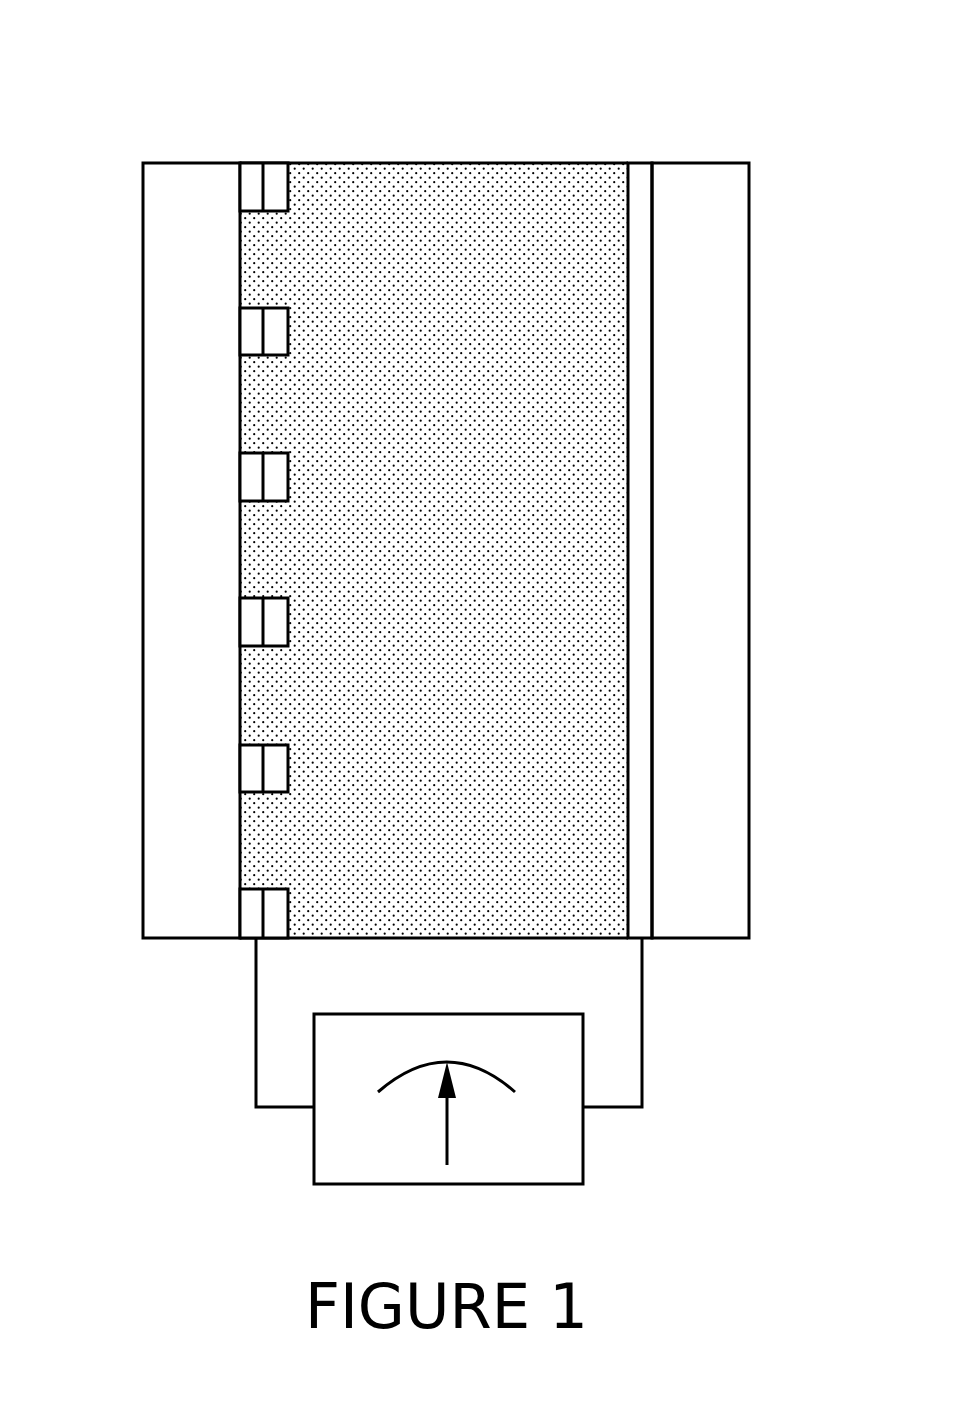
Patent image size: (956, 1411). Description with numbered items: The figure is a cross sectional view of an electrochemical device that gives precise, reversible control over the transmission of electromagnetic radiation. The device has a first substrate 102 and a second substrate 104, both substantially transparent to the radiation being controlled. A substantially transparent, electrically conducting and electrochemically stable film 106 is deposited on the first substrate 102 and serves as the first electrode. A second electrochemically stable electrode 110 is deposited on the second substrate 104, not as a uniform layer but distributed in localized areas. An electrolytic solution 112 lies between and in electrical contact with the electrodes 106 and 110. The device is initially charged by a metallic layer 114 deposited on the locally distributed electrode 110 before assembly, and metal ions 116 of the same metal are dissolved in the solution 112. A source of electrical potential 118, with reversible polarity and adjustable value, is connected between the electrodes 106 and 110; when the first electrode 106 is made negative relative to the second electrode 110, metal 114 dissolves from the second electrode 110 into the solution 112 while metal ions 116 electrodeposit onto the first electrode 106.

The first substrate 102 is at (712, 307).
The second substrate 104 is at (157, 557).
The electrically conducting and electrochemically stable film 106 is at (642, 175).
The second electrochemically stable electrode 110 is at (391, 477).
The electrolytic solution 112 is at (418, 185).
The metallic layer 114 is at (277, 178).
The metal ions 116 is at (350, 238).
The source of electrical potential 118 is at (558, 1156).